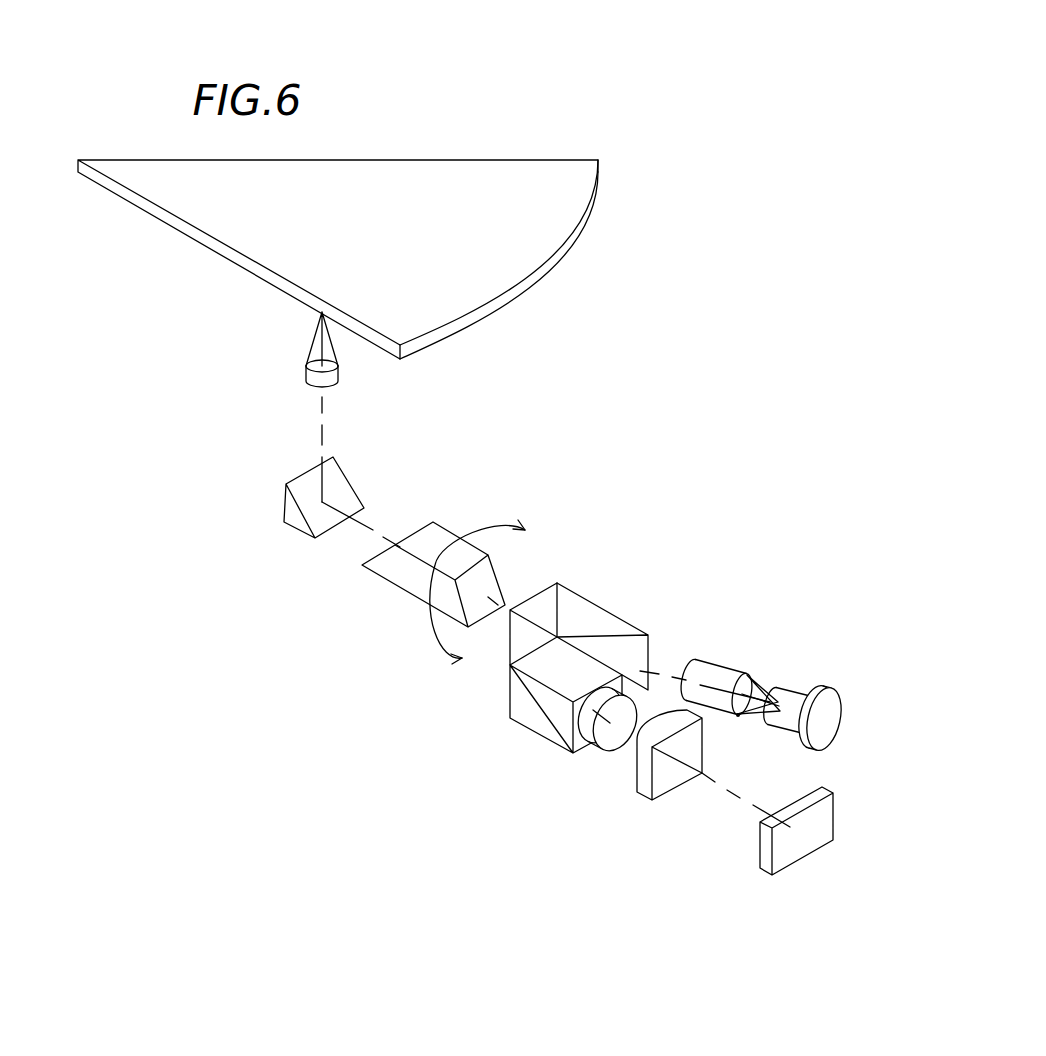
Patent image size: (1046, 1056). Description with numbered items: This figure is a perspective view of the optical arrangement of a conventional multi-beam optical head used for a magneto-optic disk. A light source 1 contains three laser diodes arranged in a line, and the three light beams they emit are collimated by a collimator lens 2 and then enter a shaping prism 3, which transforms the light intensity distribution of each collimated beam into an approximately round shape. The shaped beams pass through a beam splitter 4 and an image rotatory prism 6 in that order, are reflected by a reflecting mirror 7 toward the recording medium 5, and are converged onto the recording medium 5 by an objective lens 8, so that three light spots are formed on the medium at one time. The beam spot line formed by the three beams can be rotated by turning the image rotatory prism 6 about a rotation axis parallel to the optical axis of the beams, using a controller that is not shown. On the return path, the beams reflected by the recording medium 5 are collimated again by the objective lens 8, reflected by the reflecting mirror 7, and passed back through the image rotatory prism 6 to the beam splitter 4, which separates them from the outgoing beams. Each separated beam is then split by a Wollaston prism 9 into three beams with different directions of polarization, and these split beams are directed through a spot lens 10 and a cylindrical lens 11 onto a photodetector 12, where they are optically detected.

The light source 1 is at (833, 720).
The collimator lens 2 is at (728, 668).
The shaping prism 3 is at (603, 622).
The beam splitter 4 is at (540, 598).
The recording medium 5 is at (547, 173).
The image rotatory prism 6 is at (442, 535).
The reflecting mirror 7 is at (337, 492).
The objective lens 8 is at (304, 378).
The Wollaston prism 9 is at (543, 728).
The spot lens 10 is at (610, 745).
The cylindrical lens 11 is at (675, 777).
The photodetector 12 is at (810, 838).